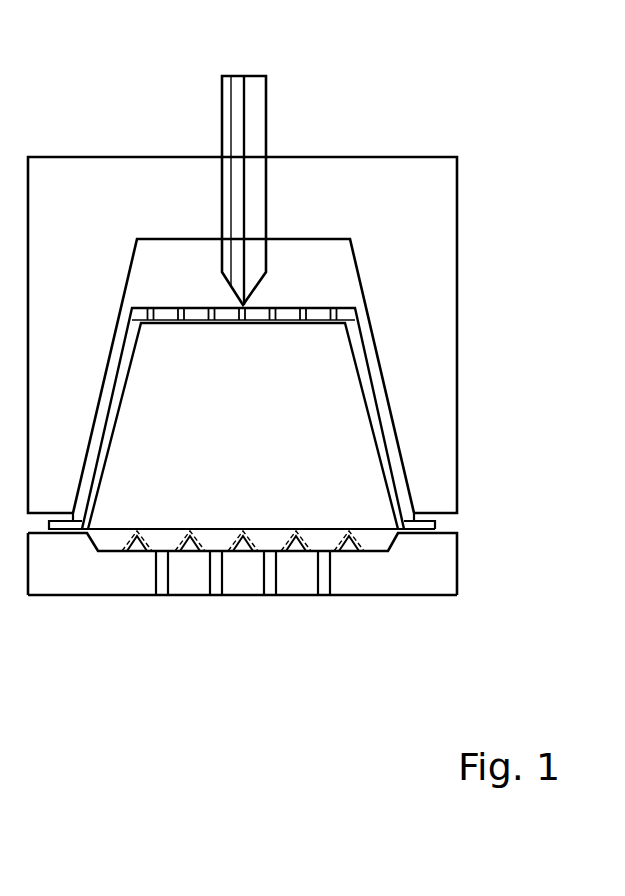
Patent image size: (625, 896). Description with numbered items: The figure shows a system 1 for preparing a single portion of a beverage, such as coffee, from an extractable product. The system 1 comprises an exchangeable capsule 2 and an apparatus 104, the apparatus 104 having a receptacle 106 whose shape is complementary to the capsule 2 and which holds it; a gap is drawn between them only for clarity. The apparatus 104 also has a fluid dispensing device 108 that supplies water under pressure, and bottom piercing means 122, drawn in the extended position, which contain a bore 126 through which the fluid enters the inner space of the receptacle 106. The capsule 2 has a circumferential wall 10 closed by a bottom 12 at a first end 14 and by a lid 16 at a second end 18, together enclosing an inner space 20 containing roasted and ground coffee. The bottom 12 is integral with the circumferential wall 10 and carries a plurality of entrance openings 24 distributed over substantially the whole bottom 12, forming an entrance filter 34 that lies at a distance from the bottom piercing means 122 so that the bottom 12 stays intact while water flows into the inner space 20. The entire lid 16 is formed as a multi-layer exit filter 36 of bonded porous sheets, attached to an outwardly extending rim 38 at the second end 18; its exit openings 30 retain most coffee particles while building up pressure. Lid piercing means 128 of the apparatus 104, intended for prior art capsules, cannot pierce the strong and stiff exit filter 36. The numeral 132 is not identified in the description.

The system 1 is at (485, 615).
The exchangeable capsule 2 is at (383, 417).
The circumferential wall 10 is at (387, 452).
The bottom 12 is at (321, 314).
The first end 14 is at (459, 298).
The lid 16 is at (376, 533).
The second end 18 is at (403, 515).
The inner space 20 is at (181, 371).
The entrance openings 24 is at (228, 301).
The exit openings 30 is at (310, 510).
The entrance filter 34 is at (294, 339).
The exit filter 36 is at (320, 533).
The outwardly extending rim 38 is at (435, 523).
The apparatus 104 is at (468, 191).
The receptacle 106 is at (459, 263).
The fluid dispensing device 108 is at (267, 80).
The bottom piercing means 122 is at (267, 142).
The bore 126 is at (238, 75).
The lid piercing means 128 is at (137, 551).
The channel wall 132 is at (163, 590).